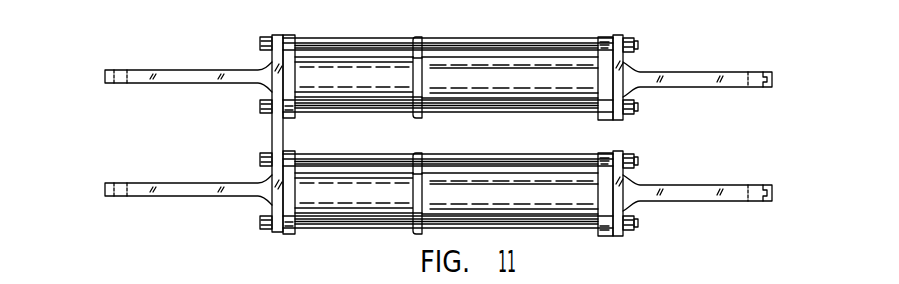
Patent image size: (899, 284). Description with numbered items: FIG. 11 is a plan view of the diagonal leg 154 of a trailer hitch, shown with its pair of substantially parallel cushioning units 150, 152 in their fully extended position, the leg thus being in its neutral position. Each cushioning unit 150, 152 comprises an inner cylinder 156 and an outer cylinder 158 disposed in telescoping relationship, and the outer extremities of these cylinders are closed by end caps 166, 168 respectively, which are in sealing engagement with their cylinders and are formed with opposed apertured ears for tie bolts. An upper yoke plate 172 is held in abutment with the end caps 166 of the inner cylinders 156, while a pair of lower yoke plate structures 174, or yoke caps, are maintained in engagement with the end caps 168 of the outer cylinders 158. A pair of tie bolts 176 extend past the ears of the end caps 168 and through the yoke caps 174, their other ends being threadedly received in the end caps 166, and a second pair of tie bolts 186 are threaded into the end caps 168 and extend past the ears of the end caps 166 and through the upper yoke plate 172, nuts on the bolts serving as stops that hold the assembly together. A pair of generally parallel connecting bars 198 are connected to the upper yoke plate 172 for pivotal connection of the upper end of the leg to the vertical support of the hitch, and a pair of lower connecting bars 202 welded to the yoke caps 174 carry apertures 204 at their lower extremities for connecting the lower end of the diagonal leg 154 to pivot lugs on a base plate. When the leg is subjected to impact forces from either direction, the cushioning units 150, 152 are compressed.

The cushioning unit 150 is at (543, 158).
The cushioning unit 152 is at (491, 114).
The diagonal leg 154 is at (355, 38).
The inner cylinder 156 is at (405, 78).
The outer cylinder 158 is at (560, 193).
The end cap 166 is at (291, 35).
The end cap 168 is at (604, 48).
The upper yoke plate 172 is at (273, 131).
The lower yoke plate structure 174 is at (626, 64).
The tie bolt 176 is at (483, 47).
The tie bolt 186 is at (348, 107).
The connecting bar 198 is at (170, 78).
The lower connecting bar 202 is at (743, 80).
The aperture 204 is at (761, 72).